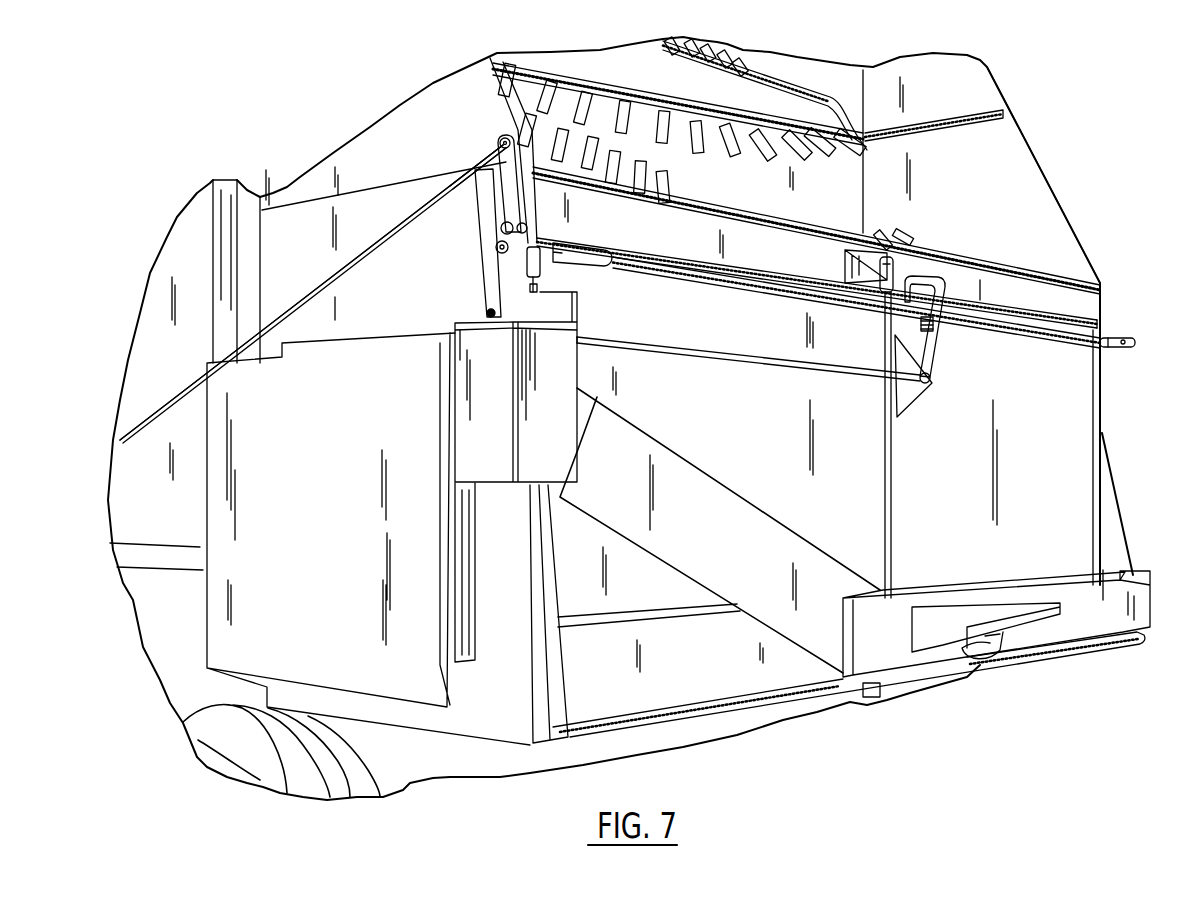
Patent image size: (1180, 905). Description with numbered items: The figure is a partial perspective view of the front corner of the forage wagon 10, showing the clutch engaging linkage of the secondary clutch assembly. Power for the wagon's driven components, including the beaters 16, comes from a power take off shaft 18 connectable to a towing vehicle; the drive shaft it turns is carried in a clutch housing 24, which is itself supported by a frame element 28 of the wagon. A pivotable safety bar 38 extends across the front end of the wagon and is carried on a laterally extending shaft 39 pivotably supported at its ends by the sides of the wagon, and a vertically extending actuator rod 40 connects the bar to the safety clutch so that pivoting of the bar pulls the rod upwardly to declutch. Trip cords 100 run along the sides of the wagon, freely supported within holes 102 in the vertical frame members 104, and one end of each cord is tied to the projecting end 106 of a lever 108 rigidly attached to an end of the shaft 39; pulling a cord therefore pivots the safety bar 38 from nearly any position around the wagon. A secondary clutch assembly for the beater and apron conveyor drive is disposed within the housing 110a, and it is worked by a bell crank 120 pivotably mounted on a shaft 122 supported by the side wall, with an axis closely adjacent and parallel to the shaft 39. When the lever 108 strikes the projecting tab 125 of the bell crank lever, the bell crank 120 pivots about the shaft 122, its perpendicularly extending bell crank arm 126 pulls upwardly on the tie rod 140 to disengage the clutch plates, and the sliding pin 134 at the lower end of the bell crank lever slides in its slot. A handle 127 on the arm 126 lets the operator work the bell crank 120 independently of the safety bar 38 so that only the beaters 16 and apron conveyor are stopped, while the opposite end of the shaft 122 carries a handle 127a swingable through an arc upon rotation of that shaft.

The forage wagon 10 is at (411, 113).
The beaters 16 is at (706, 204).
The power take off shaft 18 is at (977, 663).
The clutch housing 24 is at (928, 594).
The frame element 28 is at (713, 702).
The safety bar 38 is at (1085, 306).
The laterally extending shaft 39 is at (500, 230).
The actuator rod 40 is at (892, 453).
The trip cords 100 is at (360, 252).
The holes 102 is at (250, 332).
The vertical frame members 104 is at (214, 247).
The projecting end 106 is at (503, 137).
The levers 108 is at (497, 208).
The housing 110a is at (469, 422).
The bell crank 120 is at (483, 275).
The shaft 122 is at (497, 247).
The projecting tab 125 is at (478, 198).
The bell crank arm 126 is at (550, 244).
The handle 127 is at (600, 250).
The handle 127a is at (1137, 343).
The sliding pin 134 is at (488, 313).
The tie rod 140 is at (542, 288).